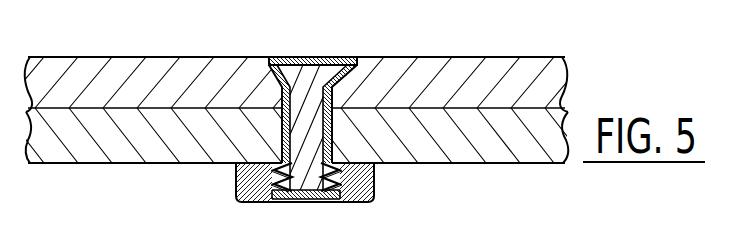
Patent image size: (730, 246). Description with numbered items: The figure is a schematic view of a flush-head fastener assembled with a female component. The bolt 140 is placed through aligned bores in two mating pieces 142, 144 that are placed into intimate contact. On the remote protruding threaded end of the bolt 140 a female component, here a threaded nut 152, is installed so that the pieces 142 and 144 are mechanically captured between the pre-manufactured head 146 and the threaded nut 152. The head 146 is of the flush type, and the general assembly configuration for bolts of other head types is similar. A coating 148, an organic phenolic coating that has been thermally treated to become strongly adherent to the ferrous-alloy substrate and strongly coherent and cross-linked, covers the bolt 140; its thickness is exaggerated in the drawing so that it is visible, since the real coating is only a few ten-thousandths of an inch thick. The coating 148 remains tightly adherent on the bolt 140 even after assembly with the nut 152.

The bolt 140 is at (302, 184).
The mating piece 142 is at (112, 68).
The mating piece 144 is at (113, 152).
The pre-manufactured head 146 is at (287, 68).
The coating 148 is at (318, 58).
The threaded nut 152 is at (357, 178).